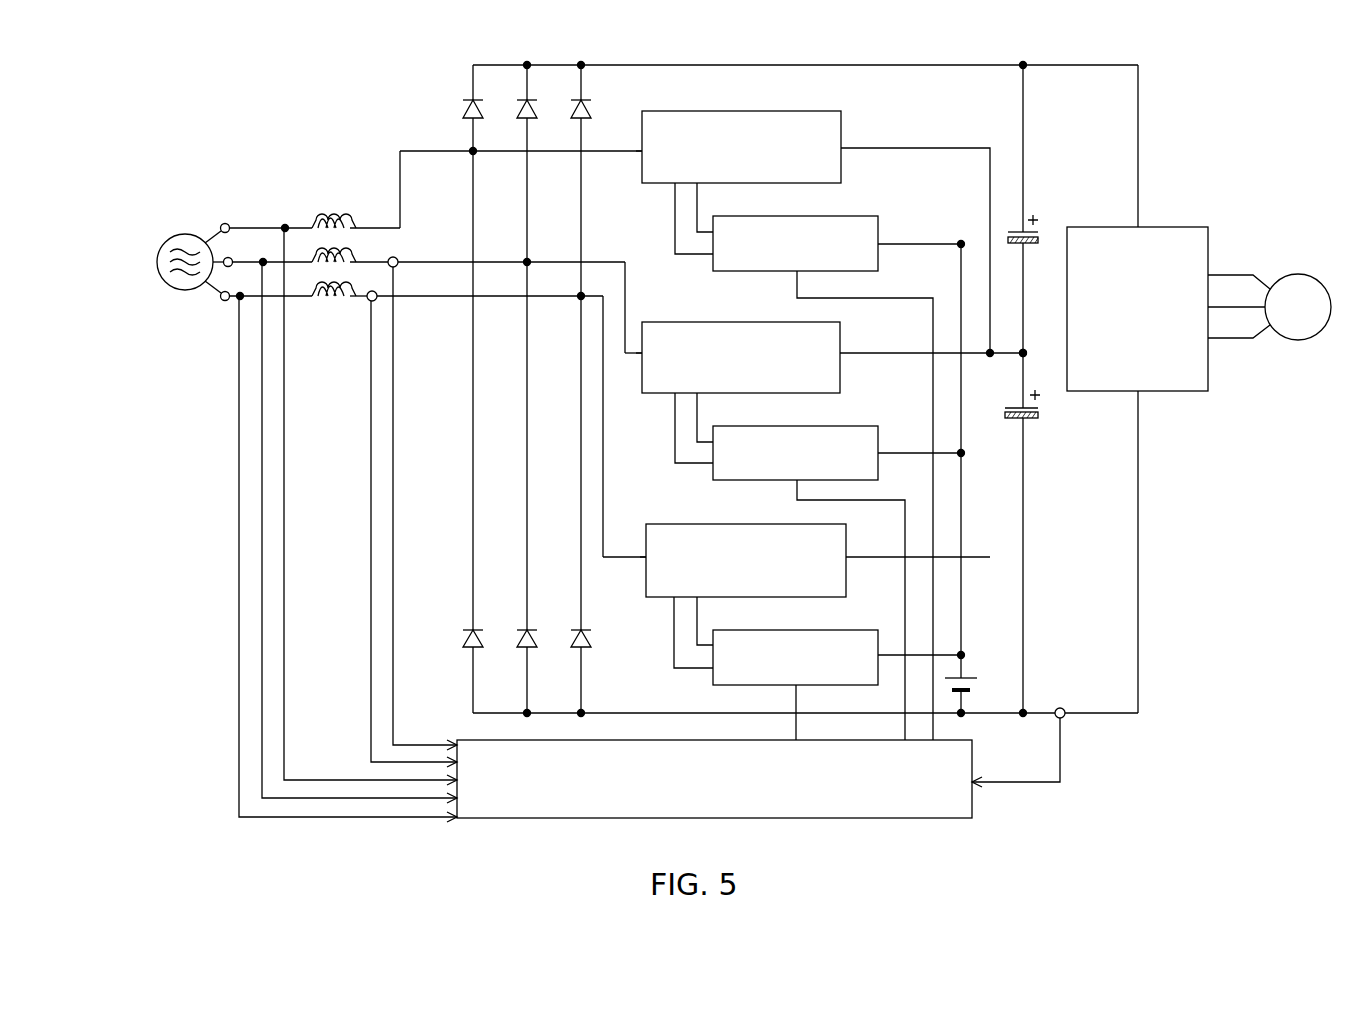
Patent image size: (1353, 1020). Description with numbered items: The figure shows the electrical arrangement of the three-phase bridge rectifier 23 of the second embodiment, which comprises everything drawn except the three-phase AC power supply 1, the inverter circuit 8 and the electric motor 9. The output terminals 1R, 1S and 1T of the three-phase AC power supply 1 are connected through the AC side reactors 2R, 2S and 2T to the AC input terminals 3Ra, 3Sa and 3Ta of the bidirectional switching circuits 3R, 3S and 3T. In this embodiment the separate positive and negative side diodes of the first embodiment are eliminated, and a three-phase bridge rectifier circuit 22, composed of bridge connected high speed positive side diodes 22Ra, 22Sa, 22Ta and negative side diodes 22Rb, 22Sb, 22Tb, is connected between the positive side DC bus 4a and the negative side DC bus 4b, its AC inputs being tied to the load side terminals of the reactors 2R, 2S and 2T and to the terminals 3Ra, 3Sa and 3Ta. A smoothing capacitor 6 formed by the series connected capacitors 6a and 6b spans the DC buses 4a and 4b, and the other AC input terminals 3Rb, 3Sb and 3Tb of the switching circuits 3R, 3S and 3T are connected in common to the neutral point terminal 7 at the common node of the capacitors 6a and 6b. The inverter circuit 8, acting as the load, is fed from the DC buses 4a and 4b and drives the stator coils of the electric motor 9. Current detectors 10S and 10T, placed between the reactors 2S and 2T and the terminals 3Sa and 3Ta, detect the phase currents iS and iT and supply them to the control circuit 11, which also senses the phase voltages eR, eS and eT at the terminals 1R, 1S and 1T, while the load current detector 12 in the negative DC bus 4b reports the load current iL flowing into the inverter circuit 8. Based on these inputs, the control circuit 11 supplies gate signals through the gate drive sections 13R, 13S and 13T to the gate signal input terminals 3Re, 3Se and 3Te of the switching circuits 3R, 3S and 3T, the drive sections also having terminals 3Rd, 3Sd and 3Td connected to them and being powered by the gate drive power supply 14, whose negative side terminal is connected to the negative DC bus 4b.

The three-phase AC power supply 1 is at (192, 234).
The output terminal 1R is at (225, 224).
The output terminal 1S is at (233, 258).
The output terminal 1T is at (224, 301).
The reactor 2R is at (330, 226).
The reactor 2S is at (338, 250).
The reactor 2T is at (332, 298).
The current detector 10S is at (394, 268).
The current detector 10T is at (371, 301).
The three-phase bridge rectifier circuit 22 is at (522, 365).
The positive side diode 22Ra is at (461, 112).
The positive side diode 22Sa is at (515, 108).
The positive side diode 22Ta is at (590, 112).
The negative side diode 22Rb is at (463, 636).
The negative side diode 22Sb is at (522, 650).
The negative side diode 22Tb is at (584, 626).
The positive side DC bus 4a is at (714, 64).
The negative side DC bus 4b is at (616, 712).
The three-phase bridge rectifier 23 is at (853, 60).
The bidirectional switching circuit 3R is at (698, 110).
The AC input terminal 3Ra is at (640, 152).
The other AC input terminal 3Rb is at (844, 144).
The R-phase switching circuit gate terminal 3Rd is at (675, 186).
The gate signal input terminal 3Re is at (700, 186).
The gate drive section 13R is at (833, 216).
The bidirectional switching circuit 3S is at (700, 322).
The AC input terminal 3Sa is at (642, 354).
The other AC input terminal 3Sb is at (840, 353).
The S-phase switching circuit gate terminal 3Sd is at (676, 395).
The gate signal input terminal 3Se is at (699, 394).
The gate drive section 13S is at (820, 426).
The bidirectional switching circuit 3T is at (706, 524).
The AC input terminal 3Ta is at (644, 556).
The other AC input terminal 3Tb is at (846, 557).
The T-phase switching circuit gate terminal 3Td is at (669, 598).
The gate signal input terminal 3Te is at (703, 598).
The gate drive section 13T is at (736, 688).
The smoothing capacitor 6 is at (1028, 389).
The capacitor 6a is at (1016, 230).
The capacitor 6b is at (1033, 422).
The neutral point terminal 7 is at (1023, 352).
The inverter circuit 8 is at (1176, 226).
The electric motor 9 is at (1293, 274).
The control circuit 11 is at (972, 752).
The load current detector 12 is at (1065, 716).
The gate drive power supply 14 is at (993, 668).
The phase voltage eR is at (284, 444).
The phase voltage eS is at (261, 507).
The phase voltage eT is at (233, 497).
The phase current iS is at (393, 404).
The phase current iT is at (372, 428).
The load current iL is at (1060, 772).